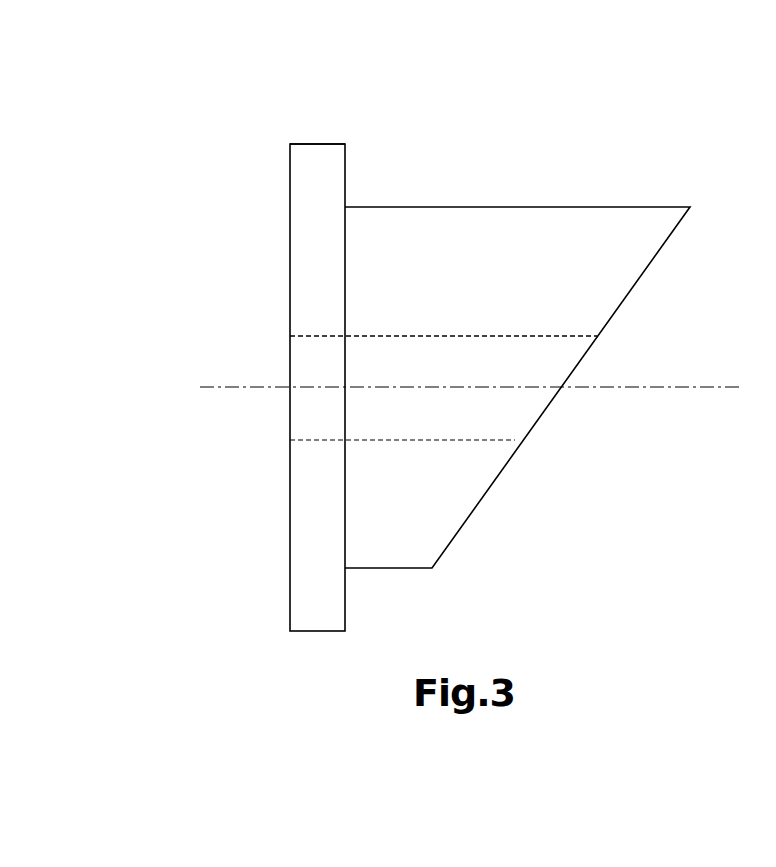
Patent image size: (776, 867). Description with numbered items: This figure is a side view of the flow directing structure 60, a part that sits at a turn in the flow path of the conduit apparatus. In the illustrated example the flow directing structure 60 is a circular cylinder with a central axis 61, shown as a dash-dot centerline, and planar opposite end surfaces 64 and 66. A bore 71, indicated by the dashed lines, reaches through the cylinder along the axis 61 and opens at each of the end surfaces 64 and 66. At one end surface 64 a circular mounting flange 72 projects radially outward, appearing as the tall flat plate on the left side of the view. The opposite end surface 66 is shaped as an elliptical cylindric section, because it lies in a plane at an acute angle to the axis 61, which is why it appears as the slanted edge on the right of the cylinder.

The flow directing structure 60 is at (266, 153).
The central axis 61 is at (240, 387).
The end surface 64 is at (290, 488).
The opposite end surface 66 is at (492, 487).
The bore 71 is at (454, 336).
The mounting flange 72 is at (316, 144).